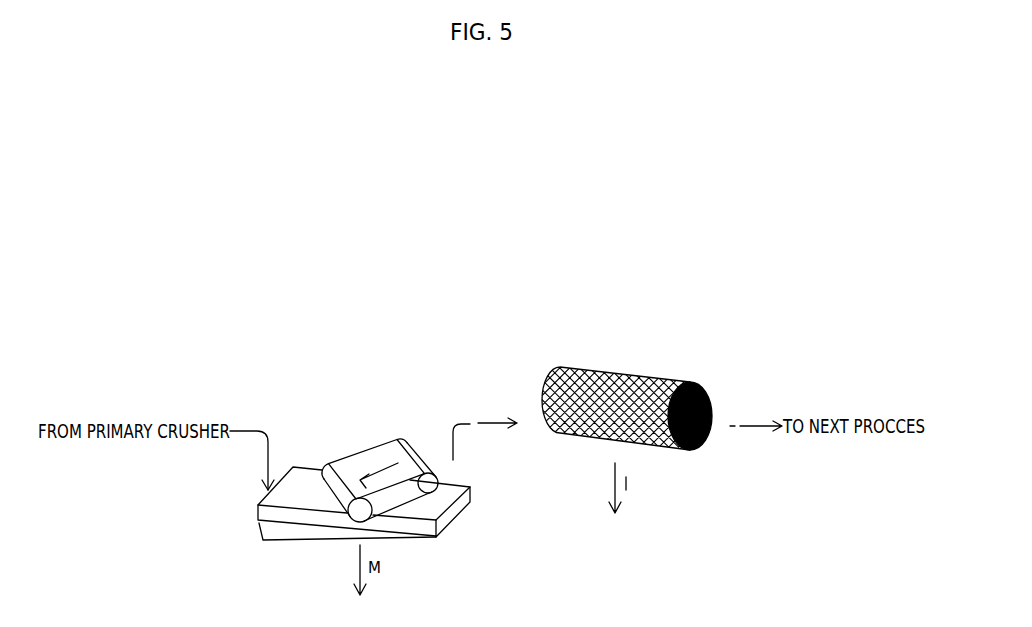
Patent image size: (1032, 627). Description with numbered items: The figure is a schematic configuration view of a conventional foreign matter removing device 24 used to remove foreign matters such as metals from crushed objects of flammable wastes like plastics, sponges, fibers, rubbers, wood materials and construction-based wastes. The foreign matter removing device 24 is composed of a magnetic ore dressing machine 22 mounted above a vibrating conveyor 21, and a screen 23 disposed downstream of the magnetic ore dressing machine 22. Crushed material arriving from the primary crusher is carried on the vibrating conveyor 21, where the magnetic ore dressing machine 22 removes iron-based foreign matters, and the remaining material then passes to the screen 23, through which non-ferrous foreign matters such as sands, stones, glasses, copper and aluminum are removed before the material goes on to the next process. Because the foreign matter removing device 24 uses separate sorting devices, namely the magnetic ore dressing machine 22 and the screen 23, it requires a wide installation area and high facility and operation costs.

The vibrating conveyor 21 is at (312, 522).
The magnetic ore dressing machine 22 is at (425, 447).
The screen 23 is at (631, 370).
The foreign matter removing device 24 is at (500, 326).